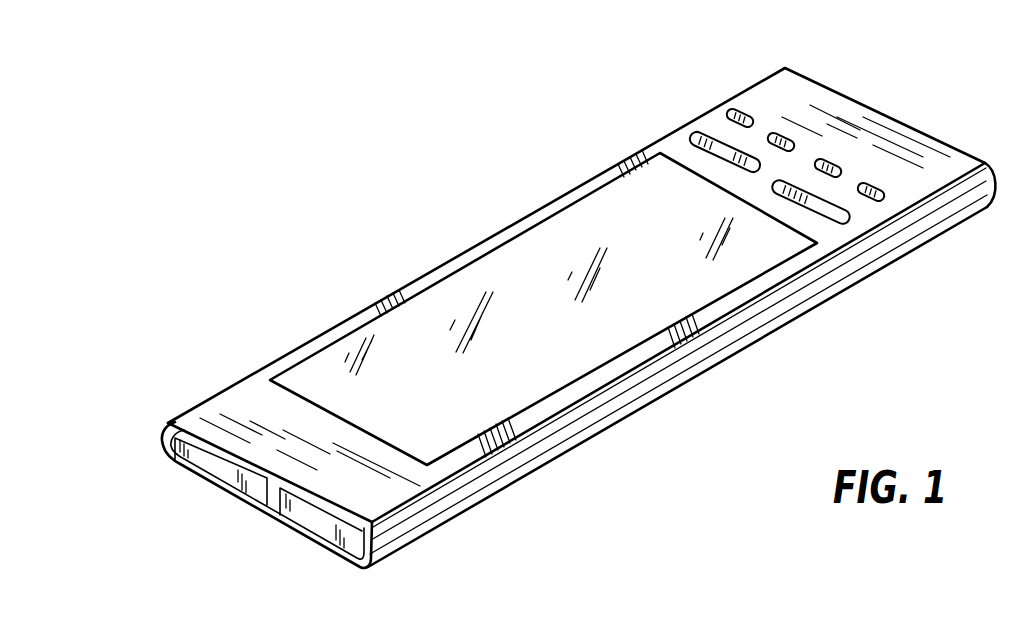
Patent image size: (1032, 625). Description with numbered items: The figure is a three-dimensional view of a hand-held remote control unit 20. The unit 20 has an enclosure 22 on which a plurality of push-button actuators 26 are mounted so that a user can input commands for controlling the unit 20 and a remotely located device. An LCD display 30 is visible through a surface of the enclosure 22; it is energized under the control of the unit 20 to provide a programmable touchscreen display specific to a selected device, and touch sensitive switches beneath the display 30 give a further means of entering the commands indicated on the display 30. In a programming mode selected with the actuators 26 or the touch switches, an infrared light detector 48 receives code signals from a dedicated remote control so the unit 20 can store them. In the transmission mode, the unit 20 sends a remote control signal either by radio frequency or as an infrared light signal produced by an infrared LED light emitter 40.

The hand-held remote control unit 20 is at (471, 203).
The enclosure 22 is at (843, 273).
The push-button actuators 26 is at (710, 137).
The LCD display 30 is at (545, 334).
The infrared LED light emitter 40 is at (232, 475).
The infrared light detector 48 is at (293, 508).